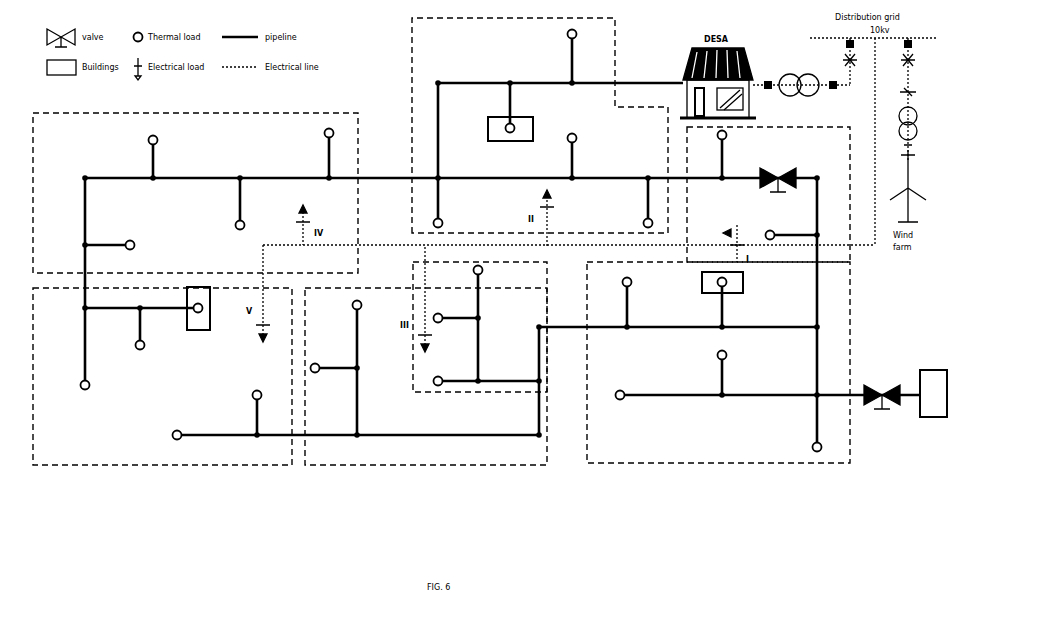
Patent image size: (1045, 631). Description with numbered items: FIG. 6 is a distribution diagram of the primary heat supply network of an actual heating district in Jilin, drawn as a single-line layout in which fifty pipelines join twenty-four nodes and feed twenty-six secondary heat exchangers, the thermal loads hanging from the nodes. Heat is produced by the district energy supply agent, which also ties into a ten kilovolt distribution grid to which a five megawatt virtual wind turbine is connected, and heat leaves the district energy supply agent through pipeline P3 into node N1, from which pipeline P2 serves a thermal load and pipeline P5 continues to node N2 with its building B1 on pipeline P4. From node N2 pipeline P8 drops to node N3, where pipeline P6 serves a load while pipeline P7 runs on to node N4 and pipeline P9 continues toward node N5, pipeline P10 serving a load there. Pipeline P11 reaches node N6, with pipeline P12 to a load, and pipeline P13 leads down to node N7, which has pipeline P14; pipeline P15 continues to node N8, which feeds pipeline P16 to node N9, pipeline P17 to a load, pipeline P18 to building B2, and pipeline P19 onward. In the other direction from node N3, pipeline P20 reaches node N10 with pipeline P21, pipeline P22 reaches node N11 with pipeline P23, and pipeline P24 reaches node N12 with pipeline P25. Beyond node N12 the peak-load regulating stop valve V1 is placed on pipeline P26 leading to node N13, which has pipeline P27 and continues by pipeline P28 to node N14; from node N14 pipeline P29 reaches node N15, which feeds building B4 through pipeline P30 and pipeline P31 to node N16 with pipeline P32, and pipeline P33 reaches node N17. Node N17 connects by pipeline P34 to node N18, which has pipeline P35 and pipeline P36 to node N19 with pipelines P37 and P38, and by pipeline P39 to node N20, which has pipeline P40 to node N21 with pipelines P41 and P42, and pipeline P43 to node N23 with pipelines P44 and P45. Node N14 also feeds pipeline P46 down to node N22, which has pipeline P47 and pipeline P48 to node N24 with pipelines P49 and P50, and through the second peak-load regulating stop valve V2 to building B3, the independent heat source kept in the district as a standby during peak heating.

The node N1 is at (579, 89).
The node N2 is at (509, 77).
The node N3 is at (445, 172).
The node N4 is at (326, 184).
The node N5 is at (237, 172).
The node N6 is at (151, 184).
The node N7 is at (76, 245).
The node N8 is at (76, 308).
The node N9 is at (139, 302).
The node N10 is at (570, 184).
The node N11 is at (648, 172).
The node N12 is at (720, 184).
The node N13 is at (828, 235).
The node N14 is at (828, 328).
The node N15 is at (720, 334).
The node N16 is at (624, 334).
The node N17 is at (550, 383).
The node N18 is at (478, 388).
The node N19 is at (488, 319).
The node N20 is at (356, 443).
The node N21 is at (367, 368).
The node N22 is at (826, 389).
The node N23 is at (252, 443).
The node N24 is at (720, 402).
The pipeline P2 is at (556, 57).
The pipeline P3 is at (627, 85).
The pipeline P4 is at (498, 105).
The pipeline P5 is at (505, 85).
The pipeline P6 is at (449, 203).
The pipeline P7 is at (318, 154).
The pipeline P8 is at (393, 132).
The pipeline P9 is at (284, 180).
The pipeline P10 is at (230, 204).
The pipeline P11 is at (162, 180).
The pipeline P12 is at (143, 157).
The pipeline P13 is at (60, 211).
The pipeline P14 is at (110, 245).
The pipeline P15 is at (62, 276).
The pipeline P16 is at (112, 307).
The pipeline P17 is at (132, 329).
The pipeline P18 is at (169, 307).
The pipeline P19 is at (65, 349).
The pipeline P20 is at (505, 180).
The pipeline P21 is at (564, 156).
The pipeline P22 is at (610, 180).
The pipeline P23 is at (639, 203).
The pipeline P24 is at (685, 180).
The pipeline P25 is at (716, 155).
The pipeline P26 is at (779, 206).
The pipeline P27 is at (792, 236).
The pipeline P28 is at (807, 281).
The pipeline P29 is at (769, 328).
The pipeline P30 is at (712, 304).
The pipeline P31 is at (674, 328).
The pipeline P32 is at (619, 303).
The pipeline P33 is at (583, 328).
The pipeline P34 is at (508, 382).
The pipeline P35 is at (453, 382).
The pipeline P36 is at (470, 349).
The pipeline P37 is at (456, 319).
The pipeline P38 is at (471, 292).
The pipeline P39 is at (448, 388).
The pipeline P40 is at (347, 401).
The pipeline P41 is at (348, 335).
The pipeline P42 is at (334, 369).
The pipeline P43 is at (307, 436).
The pipeline P44 is at (249, 413).
The pipeline P45 is at (215, 435).
The pipeline P46 is at (807, 361).
The pipeline P47 is at (807, 423).
The pipeline P48 is at (769, 396).
The pipeline P49 is at (712, 373).
The pipeline P50 is at (669, 396).
The building B1 is at (518, 129).
The building B2 is at (205, 308).
The building B3 is at (882, 393).
The building B4 is at (722, 277).
The peak-load regulating stop valve V1 is at (778, 173).
The peak-load regulating stop valve V2 is at (882, 405).